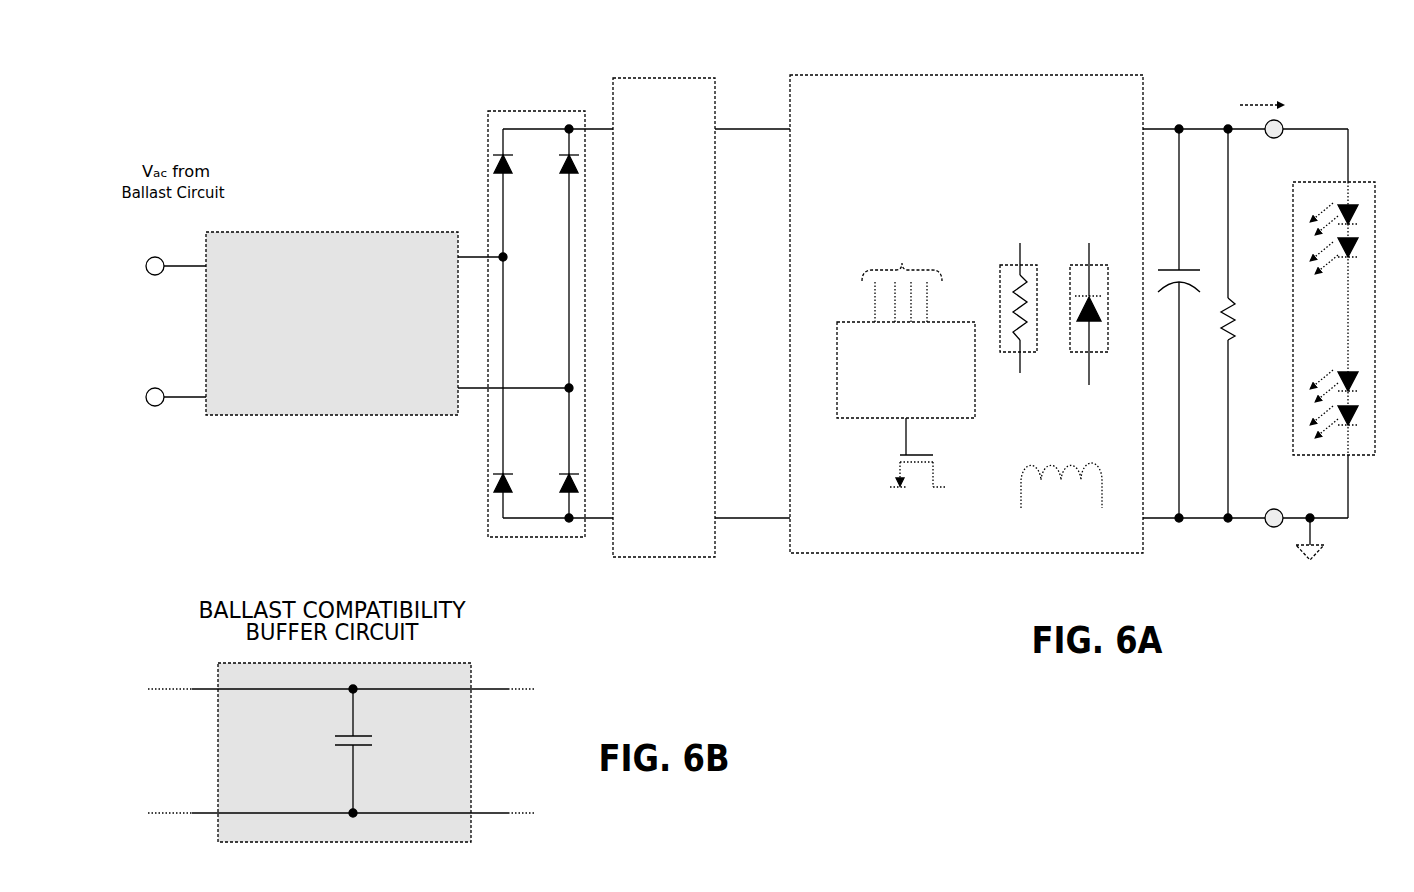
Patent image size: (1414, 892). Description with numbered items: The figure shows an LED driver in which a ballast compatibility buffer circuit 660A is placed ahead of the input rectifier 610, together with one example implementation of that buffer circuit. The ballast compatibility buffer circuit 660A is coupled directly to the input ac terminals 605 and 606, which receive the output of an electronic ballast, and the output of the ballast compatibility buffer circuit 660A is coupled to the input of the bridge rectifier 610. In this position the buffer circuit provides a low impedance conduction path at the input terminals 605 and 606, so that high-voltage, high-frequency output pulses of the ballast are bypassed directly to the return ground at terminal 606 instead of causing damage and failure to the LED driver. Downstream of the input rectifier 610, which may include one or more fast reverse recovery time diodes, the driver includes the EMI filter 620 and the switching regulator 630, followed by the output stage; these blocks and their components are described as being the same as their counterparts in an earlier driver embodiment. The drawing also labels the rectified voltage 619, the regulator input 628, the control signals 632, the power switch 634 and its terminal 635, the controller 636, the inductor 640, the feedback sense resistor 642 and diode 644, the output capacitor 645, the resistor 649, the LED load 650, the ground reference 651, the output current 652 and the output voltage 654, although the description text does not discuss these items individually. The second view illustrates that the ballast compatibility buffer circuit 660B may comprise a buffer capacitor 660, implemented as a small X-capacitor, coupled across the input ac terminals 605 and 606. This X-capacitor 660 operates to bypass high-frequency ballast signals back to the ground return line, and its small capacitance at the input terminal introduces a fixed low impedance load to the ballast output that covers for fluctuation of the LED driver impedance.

In FIG. 6A, the input ac terminal 605 is at (170, 255).
In FIG. 6B, the input ac terminal 605 is at (160, 680).
In FIG. 6A, the input ac terminal 606 is at (163, 388).
In FIG. 6B, the input ac terminal 606 is at (160, 800).
In FIG. 6A, the ballast compatibility buffer circuit 660A is at (310, 230).
In FIG. 6A, the input rectifier 610 is at (522, 108).
In FIG. 6A, the rectified voltage 619 is at (594, 90).
In FIG. 6A, the EMI filter 620 is at (668, 70).
In FIG. 6A, the input voltage 628 is at (744, 120).
In FIG. 6A, the switching regulator 630 is at (930, 72).
In FIG. 6A, the control signals 632 is at (903, 264).
In FIG. 6A, the power switch 634 is at (897, 428).
In FIG. 6A, the switch terminal 635 is at (915, 488).
In FIG. 6A, the controller 636 is at (835, 363).
In FIG. 6A, the inductor 640 is at (1072, 456).
In FIG. 6A, the feedback sense resistor 642 is at (1026, 256).
In FIG. 6A, the feedback sense diode 644 is at (1102, 258).
In FIG. 6A, the output capacitor 645 is at (1185, 268).
In FIG. 6A, the resistor 649 is at (1233, 312).
In FIG. 6A, the LED load 650 is at (1358, 180).
In FIG. 6A, the ground reference 651 is at (1298, 558).
In FIG. 6A, the output current 652 is at (1260, 80).
In FIG. 6A, the output voltage 654 is at (1330, 95).
In FIG. 6B, the ballast compatibility buffer circuit 660B is at (448, 660).
In FIG. 6B, the buffer capacitor 660 is at (336, 748).